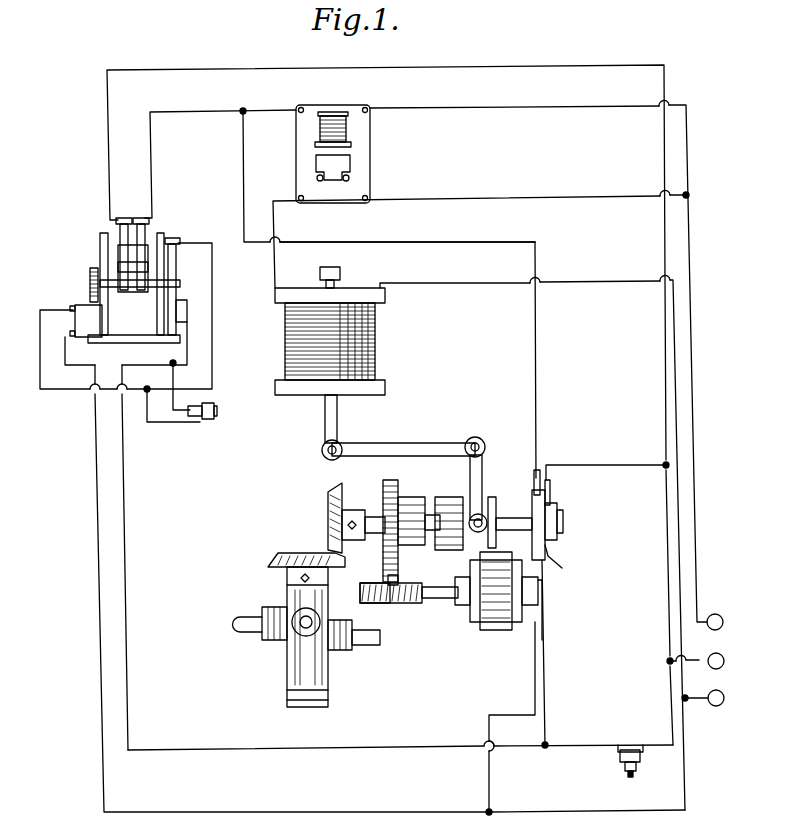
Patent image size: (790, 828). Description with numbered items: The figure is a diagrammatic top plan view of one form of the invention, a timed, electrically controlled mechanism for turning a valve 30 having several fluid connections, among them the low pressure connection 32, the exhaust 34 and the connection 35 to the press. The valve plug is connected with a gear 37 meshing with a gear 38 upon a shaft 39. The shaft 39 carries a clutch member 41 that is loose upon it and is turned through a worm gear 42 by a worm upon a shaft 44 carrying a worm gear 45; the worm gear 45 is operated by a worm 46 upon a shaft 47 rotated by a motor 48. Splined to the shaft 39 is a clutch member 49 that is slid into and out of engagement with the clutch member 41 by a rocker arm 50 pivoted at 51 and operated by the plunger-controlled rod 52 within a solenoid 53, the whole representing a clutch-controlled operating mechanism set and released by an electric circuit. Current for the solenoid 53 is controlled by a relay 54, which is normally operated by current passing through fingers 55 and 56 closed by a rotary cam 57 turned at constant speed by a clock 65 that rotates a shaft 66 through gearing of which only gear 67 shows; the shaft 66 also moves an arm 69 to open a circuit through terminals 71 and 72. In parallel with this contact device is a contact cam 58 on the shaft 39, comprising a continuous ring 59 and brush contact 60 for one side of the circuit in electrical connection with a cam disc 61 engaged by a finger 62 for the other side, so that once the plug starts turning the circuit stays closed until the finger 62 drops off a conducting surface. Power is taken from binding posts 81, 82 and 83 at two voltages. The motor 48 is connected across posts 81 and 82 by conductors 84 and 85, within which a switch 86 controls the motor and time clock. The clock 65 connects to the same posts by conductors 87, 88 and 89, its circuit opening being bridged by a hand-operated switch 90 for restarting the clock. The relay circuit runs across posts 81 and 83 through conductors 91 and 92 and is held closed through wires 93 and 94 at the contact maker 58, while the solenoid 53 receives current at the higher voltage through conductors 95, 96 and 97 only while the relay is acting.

The valve 30 is at (320, 660).
The low pressure connection 32 is at (338, 620).
The exhaust 34 is at (265, 640).
The connection to the press 35 is at (300, 636).
The gear 37 is at (268, 558).
The gear 38 is at (326, 505).
The shaft 39 is at (368, 517).
The clutch member 41 is at (414, 506).
The worm gear 42 is at (396, 484).
The shaft 44 is at (400, 583).
The worm gear 45 is at (412, 604).
The worm 46 is at (392, 604).
The shaft 47 is at (452, 604).
The motor 48 is at (499, 630).
The clutch member 49 is at (448, 500).
The rocker arm 50 is at (460, 443).
The pivot 51 is at (482, 440).
The plunger-controlled rod 52 is at (338, 413).
The solenoid 53 is at (376, 336).
The relay 54 is at (372, 144).
The finger 55 is at (116, 222).
The finger 56 is at (147, 228).
The rotary cam 57 is at (130, 318).
The contact cam 58 is at (546, 552).
The continuous ring 59 is at (563, 521).
The brush contact 60 is at (552, 500).
The cam disc 61 is at (565, 565).
The finger 62 is at (533, 482).
The clock 65 is at (84, 302).
The shaft 66 is at (88, 272).
The gear 67 is at (99, 262).
The arm 69 is at (177, 262).
The terminal 71 is at (182, 318).
The terminal 72 is at (180, 240).
The binding post 81 is at (722, 656).
The binding post 82 is at (718, 706).
The binding post 83 is at (720, 614).
The conductor 84 is at (546, 690).
The conductor 85 is at (535, 700).
The switch 86 is at (636, 764).
The conductor 87 is at (130, 580).
The conductor 88 is at (212, 305).
The conductor 89 is at (97, 516).
The hand-operated switch 90 is at (208, 420).
The conductor 91 is at (470, 66).
The conductor 92 is at (236, 110).
The wire 93 is at (537, 400).
The wire 94 is at (610, 465).
The conductor 95 is at (495, 282).
The conductor 96 is at (276, 228).
The conductor 97 is at (498, 197).